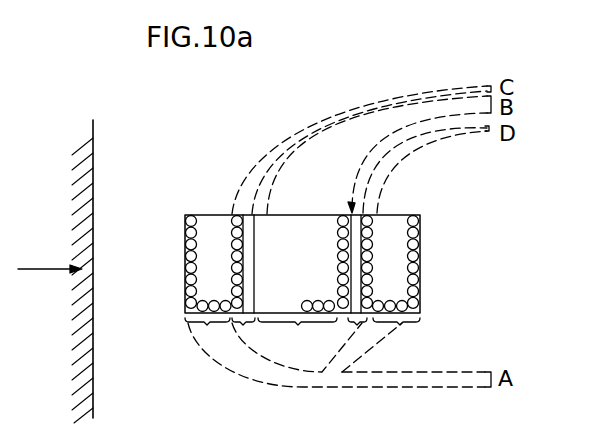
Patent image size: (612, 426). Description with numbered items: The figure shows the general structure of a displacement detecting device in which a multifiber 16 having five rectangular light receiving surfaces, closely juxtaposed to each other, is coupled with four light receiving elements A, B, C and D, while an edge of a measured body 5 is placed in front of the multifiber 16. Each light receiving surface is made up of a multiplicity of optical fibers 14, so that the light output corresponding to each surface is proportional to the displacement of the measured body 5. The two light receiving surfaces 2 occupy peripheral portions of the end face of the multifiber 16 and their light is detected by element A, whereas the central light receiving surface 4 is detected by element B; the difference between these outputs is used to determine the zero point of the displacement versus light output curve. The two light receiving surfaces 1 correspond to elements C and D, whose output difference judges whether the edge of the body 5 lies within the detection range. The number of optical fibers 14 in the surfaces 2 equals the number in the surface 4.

The light receiving surface 1 is at (248, 228).
The light receiving surface 2 is at (302, 264).
The light receiving surface 4 is at (314, 264).
The measured body 5 is at (92, 160).
The optical fibers 14 is at (422, 226).
The multifiber 16 is at (175, 313).